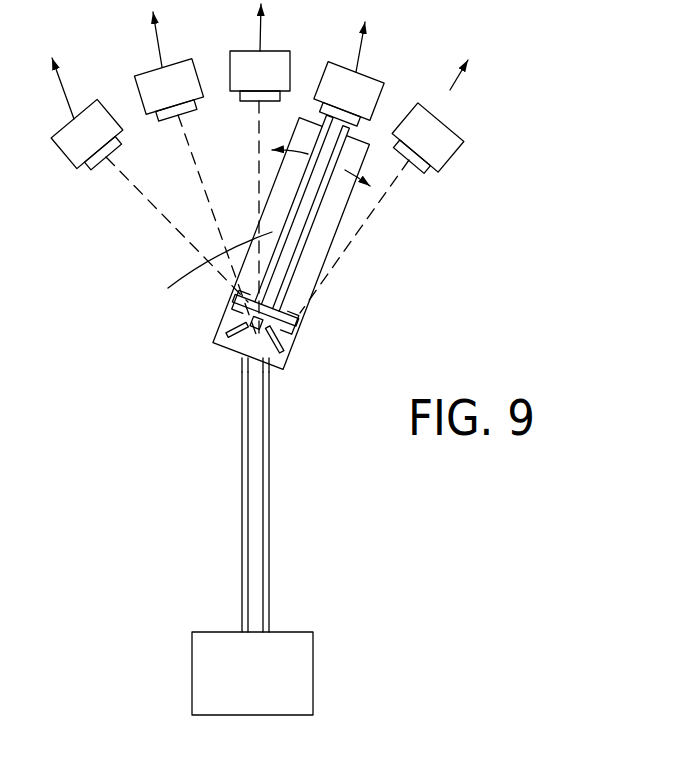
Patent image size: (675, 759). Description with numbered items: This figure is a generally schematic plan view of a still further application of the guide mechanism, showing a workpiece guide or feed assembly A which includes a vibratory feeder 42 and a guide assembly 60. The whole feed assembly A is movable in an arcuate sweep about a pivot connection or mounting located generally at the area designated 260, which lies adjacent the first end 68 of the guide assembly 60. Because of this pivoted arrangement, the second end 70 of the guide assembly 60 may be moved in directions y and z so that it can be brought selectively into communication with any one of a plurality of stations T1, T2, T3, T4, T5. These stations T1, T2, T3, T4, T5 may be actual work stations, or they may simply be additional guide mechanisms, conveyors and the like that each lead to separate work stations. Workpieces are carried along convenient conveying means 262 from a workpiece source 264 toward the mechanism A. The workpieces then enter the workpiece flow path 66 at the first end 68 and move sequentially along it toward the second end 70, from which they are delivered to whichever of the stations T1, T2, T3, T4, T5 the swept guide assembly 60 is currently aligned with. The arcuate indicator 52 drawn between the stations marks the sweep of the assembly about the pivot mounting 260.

The station T1 is at (149, 180).
The station T2 is at (195, 174).
The station T3 is at (260, 172).
The station T4 is at (347, 76).
The station T5 is at (384, 186).
The workpiece guide or feed assembly A is at (348, 207).
The workpiece flow path 66 is at (292, 243).
The second end 70 is at (340, 132).
The vibratory feeder 42 is at (308, 310).
The first end 68 is at (247, 343).
The rotation angle arc 52 is at (158, 292).
The guide assembly 60 is at (302, 182).
The direction y is at (278, 142).
The direction z is at (383, 181).
The pivot connection or mounting 260 is at (257, 345).
The conveying means 262 is at (260, 470).
The workpiece source 264 is at (300, 663).